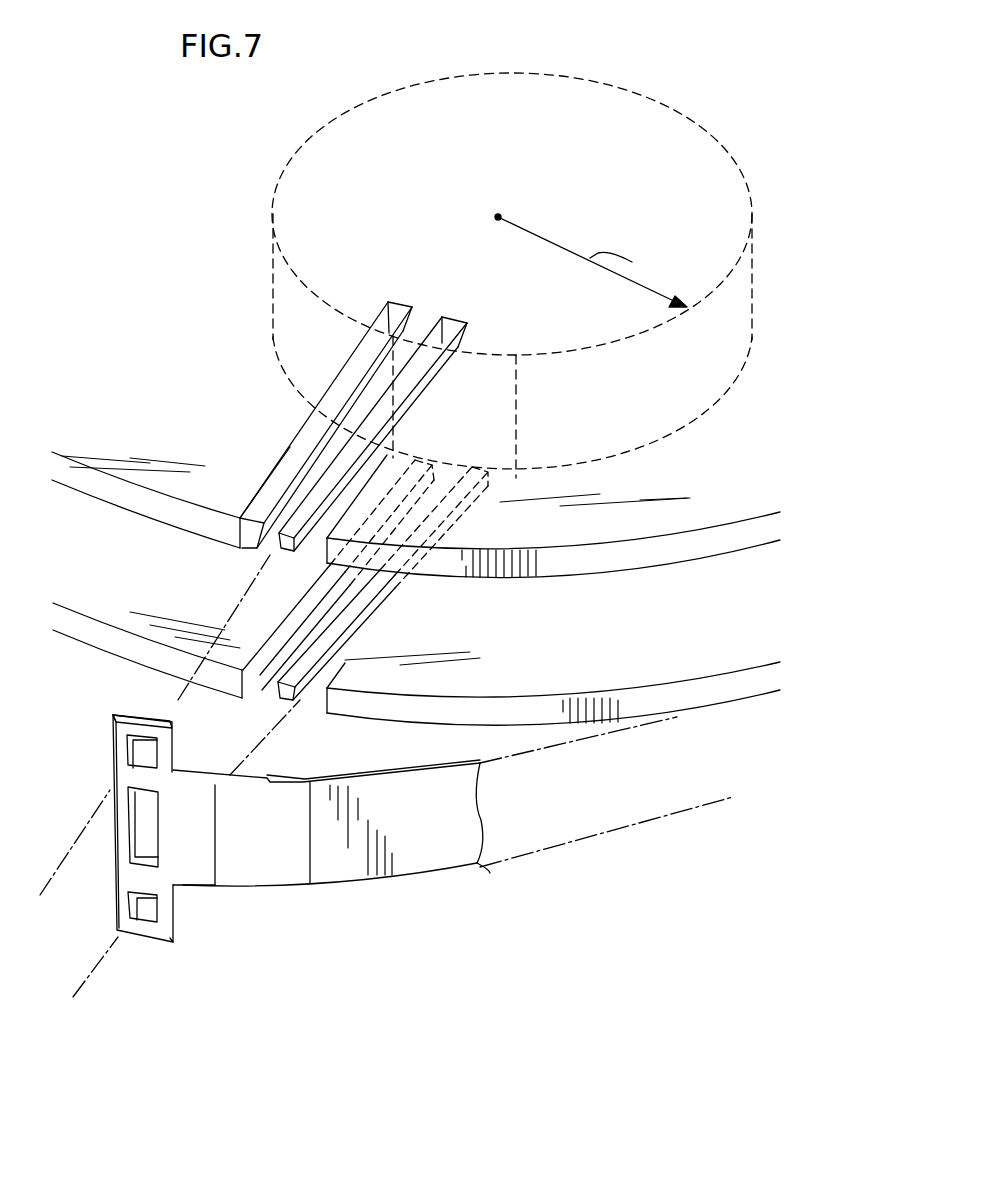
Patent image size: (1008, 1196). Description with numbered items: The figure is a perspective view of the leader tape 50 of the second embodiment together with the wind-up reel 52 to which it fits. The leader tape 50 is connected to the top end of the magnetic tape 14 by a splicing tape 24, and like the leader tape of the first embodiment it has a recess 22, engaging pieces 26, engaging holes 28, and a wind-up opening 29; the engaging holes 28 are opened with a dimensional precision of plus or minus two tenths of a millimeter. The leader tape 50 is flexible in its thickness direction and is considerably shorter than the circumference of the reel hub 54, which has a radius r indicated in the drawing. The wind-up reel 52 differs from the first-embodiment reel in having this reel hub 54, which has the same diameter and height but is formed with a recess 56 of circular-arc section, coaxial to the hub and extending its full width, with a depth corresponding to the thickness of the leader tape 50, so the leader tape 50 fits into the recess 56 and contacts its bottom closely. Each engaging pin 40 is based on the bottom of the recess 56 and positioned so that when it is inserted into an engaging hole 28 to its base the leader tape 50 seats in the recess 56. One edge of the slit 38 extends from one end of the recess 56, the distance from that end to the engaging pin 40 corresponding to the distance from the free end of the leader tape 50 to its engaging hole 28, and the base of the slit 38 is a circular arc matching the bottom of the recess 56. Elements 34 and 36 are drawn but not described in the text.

The magnetic tape 14 is at (437, 853).
The recess 22 is at (246, 794).
The splicing tape 24 is at (281, 867).
The engaging pieces 26 is at (117, 725).
The engaging holes 28 is at (150, 748).
The wind-up opening 29 is at (140, 828).
The upper arcuate ring 34 is at (142, 473).
The lower arcuate ring 36 is at (110, 608).
The slit 38 is at (307, 467).
The engaging pin 40 is at (300, 510).
The leader tape 50 is at (200, 872).
The wind-up reel 52 is at (36, 638).
The reel hub 54 is at (718, 270).
The recess 56 is at (514, 406).